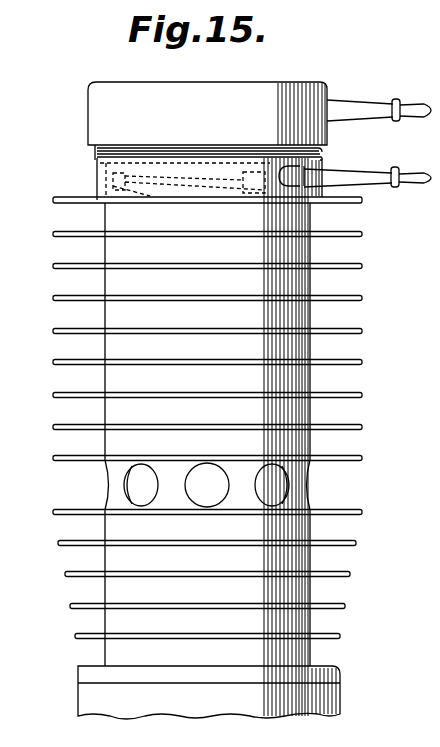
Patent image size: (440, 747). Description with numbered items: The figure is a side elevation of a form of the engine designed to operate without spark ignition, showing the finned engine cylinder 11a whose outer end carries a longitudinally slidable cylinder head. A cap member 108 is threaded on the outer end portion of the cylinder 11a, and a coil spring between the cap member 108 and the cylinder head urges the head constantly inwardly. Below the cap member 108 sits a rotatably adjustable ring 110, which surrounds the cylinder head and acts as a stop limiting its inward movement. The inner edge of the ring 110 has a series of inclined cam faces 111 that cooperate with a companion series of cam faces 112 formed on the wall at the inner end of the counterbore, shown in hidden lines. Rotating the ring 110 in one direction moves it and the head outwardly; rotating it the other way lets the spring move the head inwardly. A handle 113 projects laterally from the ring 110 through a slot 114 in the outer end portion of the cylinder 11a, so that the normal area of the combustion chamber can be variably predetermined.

The cap member 108 is at (205, 92).
The ring 110 is at (97, 164).
The inclined cam faces 111 is at (185, 179).
The cam faces 112 is at (189, 187).
The handle 113 is at (352, 178).
The slot 114 is at (300, 165).
The engine cylinder 11a is at (313, 377).